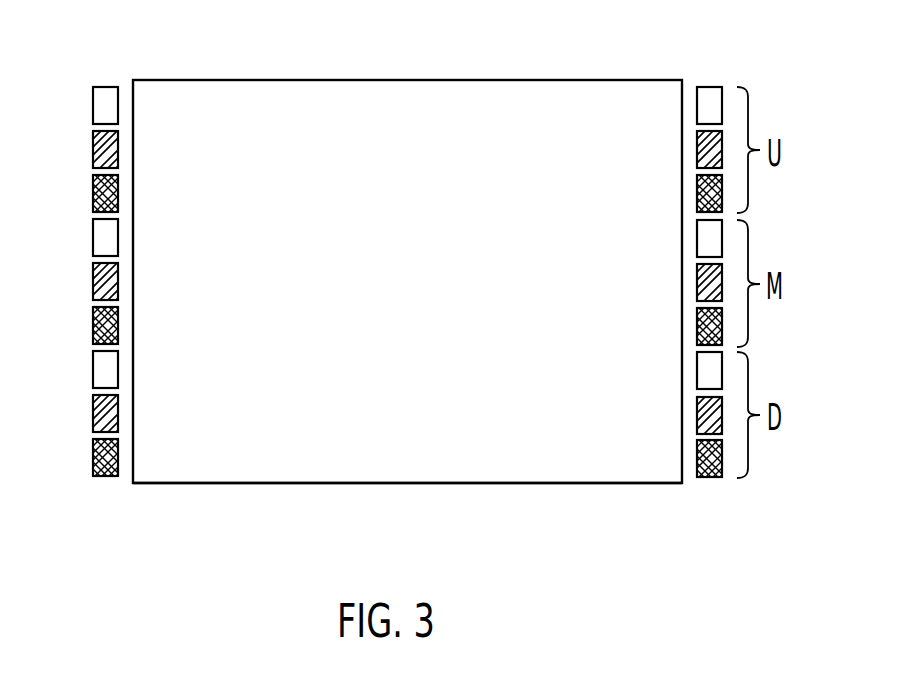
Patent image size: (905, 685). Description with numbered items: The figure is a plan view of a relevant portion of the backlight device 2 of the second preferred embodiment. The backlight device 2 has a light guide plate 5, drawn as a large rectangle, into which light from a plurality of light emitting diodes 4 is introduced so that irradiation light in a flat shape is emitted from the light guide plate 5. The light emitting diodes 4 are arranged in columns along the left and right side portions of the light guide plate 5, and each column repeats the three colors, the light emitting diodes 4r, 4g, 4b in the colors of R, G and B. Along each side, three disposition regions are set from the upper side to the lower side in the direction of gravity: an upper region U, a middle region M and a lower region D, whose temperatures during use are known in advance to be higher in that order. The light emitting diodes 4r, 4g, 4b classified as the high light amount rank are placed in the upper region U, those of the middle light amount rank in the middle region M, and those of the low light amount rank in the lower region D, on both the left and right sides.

The backlight device 2 is at (462, 52).
The light emitting diodes 4 is at (106, 478).
The light emitting diode in the color of R 4r is at (93, 103).
The light emitting diode in the color of G 4g is at (93, 146).
The light emitting diode in the color of B 4b is at (93, 189).
The light guide plate 5 is at (446, 470).